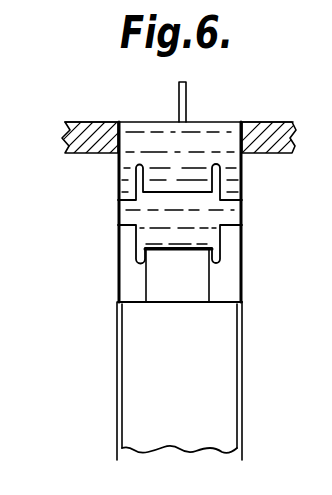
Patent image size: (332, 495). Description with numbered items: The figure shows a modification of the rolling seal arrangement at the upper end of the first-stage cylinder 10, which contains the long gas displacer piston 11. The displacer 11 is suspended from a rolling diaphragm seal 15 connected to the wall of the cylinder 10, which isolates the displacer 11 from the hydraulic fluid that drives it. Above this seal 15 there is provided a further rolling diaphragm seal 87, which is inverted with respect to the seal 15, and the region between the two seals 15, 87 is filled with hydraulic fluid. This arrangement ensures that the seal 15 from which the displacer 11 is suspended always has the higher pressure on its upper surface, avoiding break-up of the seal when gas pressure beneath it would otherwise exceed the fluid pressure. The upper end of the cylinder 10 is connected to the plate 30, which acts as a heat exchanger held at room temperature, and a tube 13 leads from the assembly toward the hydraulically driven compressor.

The cylinder 10 is at (115, 273).
The gas displacer piston 11 is at (208, 361).
The tube 13 is at (187, 95).
The rolling diaphragm seal 15 is at (221, 250).
The plate 30 is at (88, 140).
The further rolling diaphragm seal 87 is at (221, 177).